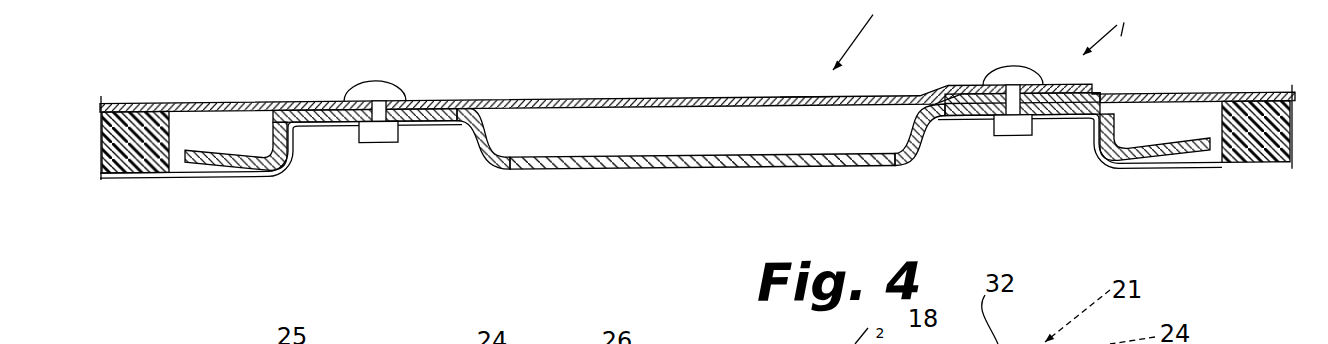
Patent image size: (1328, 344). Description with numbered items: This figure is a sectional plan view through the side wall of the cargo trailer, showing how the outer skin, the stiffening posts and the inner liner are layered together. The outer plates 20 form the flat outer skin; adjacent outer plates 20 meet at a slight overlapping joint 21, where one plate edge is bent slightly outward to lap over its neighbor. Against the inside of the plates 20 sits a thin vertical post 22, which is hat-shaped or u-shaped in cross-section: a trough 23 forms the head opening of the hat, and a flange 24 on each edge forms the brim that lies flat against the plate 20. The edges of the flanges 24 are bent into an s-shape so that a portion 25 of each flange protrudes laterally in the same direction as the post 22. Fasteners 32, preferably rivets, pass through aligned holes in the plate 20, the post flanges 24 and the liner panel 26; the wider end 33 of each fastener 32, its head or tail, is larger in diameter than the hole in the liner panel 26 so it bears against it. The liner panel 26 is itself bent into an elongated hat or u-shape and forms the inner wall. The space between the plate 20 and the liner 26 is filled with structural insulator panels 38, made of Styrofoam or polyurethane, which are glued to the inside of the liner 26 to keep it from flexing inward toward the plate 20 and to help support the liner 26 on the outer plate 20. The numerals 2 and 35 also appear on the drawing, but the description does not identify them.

The vehicle floor assembly 2 is at (862, 39).
The outer plate 20 is at (593, 103).
The overlapping joint 21 is at (1127, 33).
The vertical post 22 is at (527, 177).
The trough 23 is at (805, 58).
The flange 24 is at (427, 107).
The portion of the flange 25 is at (1213, 44).
The liner panel 26 is at (183, 182).
The fastener 32 is at (384, 84).
The wider end of the fastener 33 is at (380, 137).
The inclined web 35 is at (433, 131).
The structural insulator panel 38 is at (178, 139).